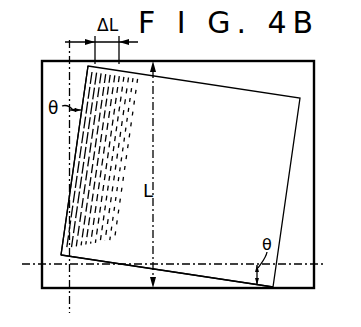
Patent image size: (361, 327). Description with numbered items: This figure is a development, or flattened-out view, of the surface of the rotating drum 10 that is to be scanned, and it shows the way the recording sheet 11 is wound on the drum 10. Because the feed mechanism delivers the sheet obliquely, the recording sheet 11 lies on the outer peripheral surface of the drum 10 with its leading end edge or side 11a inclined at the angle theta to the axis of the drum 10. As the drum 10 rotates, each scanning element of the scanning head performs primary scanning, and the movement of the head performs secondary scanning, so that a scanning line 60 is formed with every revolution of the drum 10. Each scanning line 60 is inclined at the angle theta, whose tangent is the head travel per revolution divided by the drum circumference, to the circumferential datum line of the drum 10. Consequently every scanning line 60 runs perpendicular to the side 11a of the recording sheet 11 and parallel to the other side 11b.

The rotating drum 10 is at (299, 87).
The recording sheet 11 is at (262, 201).
The leading end edge 11a is at (165, 270).
The side 11b is at (73, 153).
The scanning line 60 is at (68, 211).